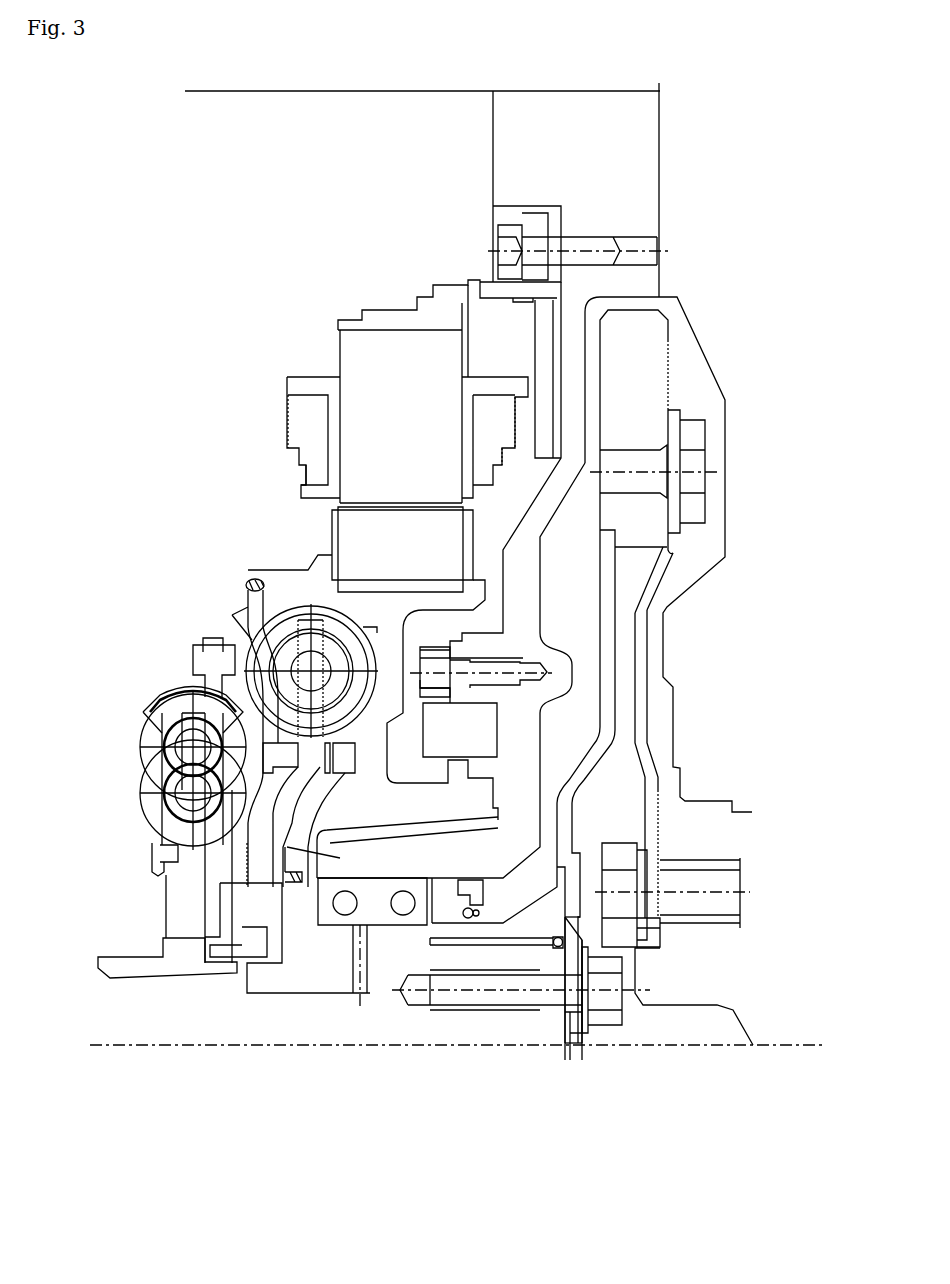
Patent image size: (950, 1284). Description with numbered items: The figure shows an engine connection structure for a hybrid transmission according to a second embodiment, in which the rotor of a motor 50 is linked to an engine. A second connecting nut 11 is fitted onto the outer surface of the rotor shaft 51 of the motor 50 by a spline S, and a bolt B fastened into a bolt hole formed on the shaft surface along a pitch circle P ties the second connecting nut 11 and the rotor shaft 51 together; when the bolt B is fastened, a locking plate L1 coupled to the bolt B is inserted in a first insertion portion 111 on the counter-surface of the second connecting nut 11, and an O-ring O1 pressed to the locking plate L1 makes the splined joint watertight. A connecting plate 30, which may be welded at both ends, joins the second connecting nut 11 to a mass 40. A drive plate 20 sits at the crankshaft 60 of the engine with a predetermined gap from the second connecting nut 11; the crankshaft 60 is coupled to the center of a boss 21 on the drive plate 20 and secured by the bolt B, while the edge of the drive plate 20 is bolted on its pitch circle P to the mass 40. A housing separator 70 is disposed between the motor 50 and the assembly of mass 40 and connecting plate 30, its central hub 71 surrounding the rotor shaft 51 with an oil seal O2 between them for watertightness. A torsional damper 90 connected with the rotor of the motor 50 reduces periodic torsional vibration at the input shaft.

The motor 50 is at (338, 351).
The mass 40 is at (637, 355).
The housing separator 70 is at (552, 500).
The connecting plate 30 is at (607, 620).
The drive plate 20 is at (640, 663).
The torsional damper 90 is at (174, 684).
The hub 71 is at (290, 848).
The crankshaft 60 is at (683, 978).
The first insertion portion 111 is at (580, 923).
The O-ring O1 is at (563, 938).
The bolt B is at (707, 895).
The boss 21 is at (657, 937).
The pitch circle P is at (498, 993).
The rotor shaft 51 is at (540, 1022).
The locking plate L1 is at (572, 1035).
The second connecting nut 11 is at (450, 927).
The spline S is at (483, 938).
The oil seal O2 is at (433, 922).